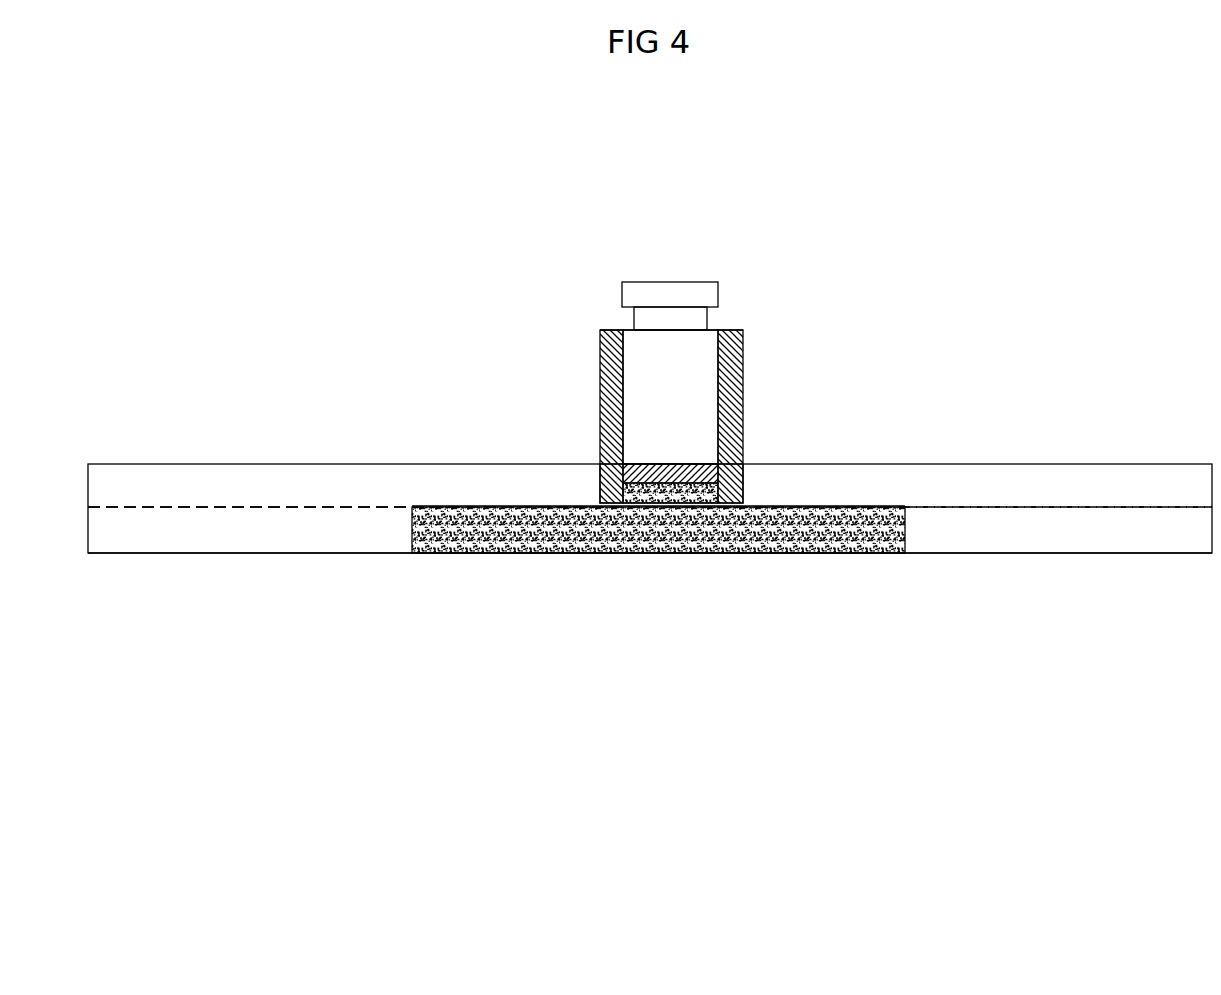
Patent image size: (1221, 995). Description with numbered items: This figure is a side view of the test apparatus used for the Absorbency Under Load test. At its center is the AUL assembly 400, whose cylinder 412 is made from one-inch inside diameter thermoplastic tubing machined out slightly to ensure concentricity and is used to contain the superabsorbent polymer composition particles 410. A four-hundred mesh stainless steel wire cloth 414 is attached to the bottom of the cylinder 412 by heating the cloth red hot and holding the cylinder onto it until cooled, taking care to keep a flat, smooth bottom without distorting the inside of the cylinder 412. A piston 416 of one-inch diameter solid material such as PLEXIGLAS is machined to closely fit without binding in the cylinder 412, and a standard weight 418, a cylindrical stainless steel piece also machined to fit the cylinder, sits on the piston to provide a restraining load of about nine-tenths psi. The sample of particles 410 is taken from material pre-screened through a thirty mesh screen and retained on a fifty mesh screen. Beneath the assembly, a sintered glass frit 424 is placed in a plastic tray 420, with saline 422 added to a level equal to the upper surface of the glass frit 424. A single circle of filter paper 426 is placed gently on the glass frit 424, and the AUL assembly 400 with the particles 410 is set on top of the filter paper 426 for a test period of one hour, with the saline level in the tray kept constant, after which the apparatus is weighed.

The AUL assembly 400 is at (671, 413).
The superabsorbent polymer composition particles 410 is at (713, 482).
The cylinder 412 is at (600, 375).
The stainless steel wire cloth 414 is at (663, 507).
The piston 416 is at (688, 462).
The weight 418 is at (653, 350).
The plastic tray 420 is at (1073, 482).
The saline 422 is at (1006, 530).
The sintered glass frit 424 is at (603, 527).
The filter paper 426 is at (490, 503).